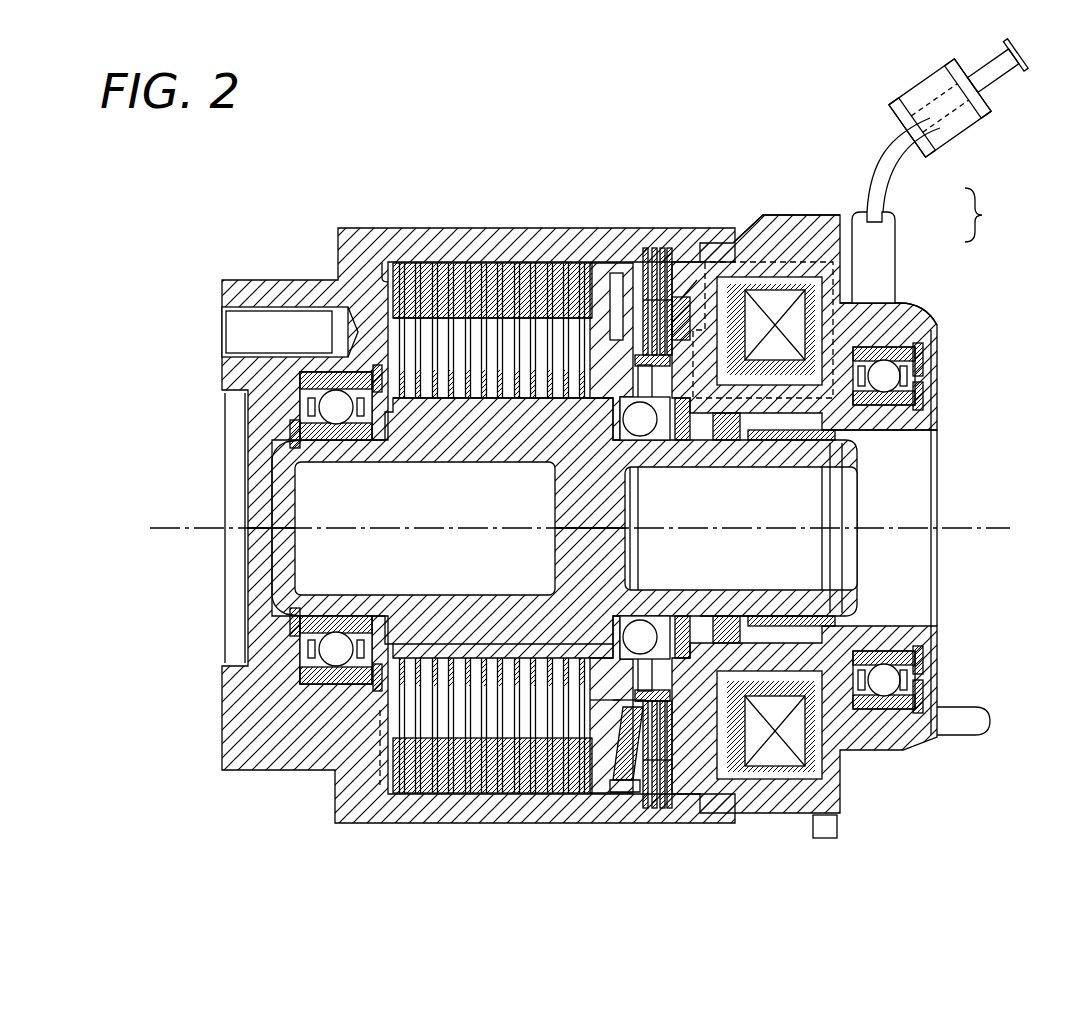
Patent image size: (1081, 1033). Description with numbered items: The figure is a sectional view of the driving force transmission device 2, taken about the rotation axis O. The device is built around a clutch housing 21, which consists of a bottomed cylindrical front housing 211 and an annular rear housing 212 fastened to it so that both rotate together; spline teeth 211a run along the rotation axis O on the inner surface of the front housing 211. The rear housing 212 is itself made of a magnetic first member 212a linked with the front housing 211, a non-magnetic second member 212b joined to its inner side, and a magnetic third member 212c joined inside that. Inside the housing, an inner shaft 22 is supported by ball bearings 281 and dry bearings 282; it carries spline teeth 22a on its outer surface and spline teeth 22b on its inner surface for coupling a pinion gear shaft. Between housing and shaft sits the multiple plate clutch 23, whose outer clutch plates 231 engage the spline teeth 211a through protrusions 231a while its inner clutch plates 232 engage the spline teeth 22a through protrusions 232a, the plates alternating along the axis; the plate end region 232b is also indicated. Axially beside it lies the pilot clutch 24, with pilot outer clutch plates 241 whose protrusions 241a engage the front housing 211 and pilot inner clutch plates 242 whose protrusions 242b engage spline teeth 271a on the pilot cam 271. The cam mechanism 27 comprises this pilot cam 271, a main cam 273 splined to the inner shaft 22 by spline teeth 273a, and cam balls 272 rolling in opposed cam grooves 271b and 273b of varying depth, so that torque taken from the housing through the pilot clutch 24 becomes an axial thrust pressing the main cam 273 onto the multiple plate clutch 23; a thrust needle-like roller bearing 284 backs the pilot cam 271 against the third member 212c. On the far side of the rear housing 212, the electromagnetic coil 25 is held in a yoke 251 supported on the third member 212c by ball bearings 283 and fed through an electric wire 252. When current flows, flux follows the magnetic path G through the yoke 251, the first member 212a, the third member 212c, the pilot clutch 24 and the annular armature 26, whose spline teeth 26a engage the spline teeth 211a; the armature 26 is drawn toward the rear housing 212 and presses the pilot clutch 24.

The driving force transmission device 2 is at (990, 157).
The clutch housing 21 is at (984, 215).
The front housing 211 is at (852, 213).
The spline teeth 211a is at (385, 255).
The rear housing 212 is at (845, 260).
The first member 212a is at (748, 244).
The second member 212b is at (682, 294).
The third member 212c is at (922, 415).
The inner shaft 22 is at (855, 606).
The spline teeth 22a is at (462, 648).
The spline teeth 22b is at (760, 590).
The multiple plate clutch 23 is at (400, 810).
The outer clutch plates 231 is at (527, 792).
The protrusions 231a is at (543, 795).
The inner clutch plates 232 is at (438, 340).
The protrusions 232a is at (440, 412).
The inner plate end 232b is at (400, 420).
The pilot clutch 24 is at (664, 248).
The pilot outer clutch plates 241 is at (680, 806).
The protrusions 241a is at (655, 250).
The pilot inner clutch plates 242 is at (663, 797).
The protrusions 242b is at (657, 665).
The electromagnetic coil 25 is at (793, 317).
The yoke 251 is at (915, 335).
The electric wire 252 is at (887, 170).
The armature 26 is at (638, 725).
The spline teeth 26a is at (628, 792).
The cam mechanism 27 is at (585, 262).
The pilot cam 271 is at (690, 440).
The spline teeth 271a is at (627, 700).
The cam grooves 271b is at (668, 436).
The cam balls 272 is at (650, 437).
The main cam 273 is at (598, 258).
The spline teeth 273a is at (590, 650).
The cam grooves 273b is at (646, 432).
The ball bearings 281 is at (293, 422).
The dry bearings 282 is at (836, 433).
The ball bearings 283 is at (925, 352).
The thrust needle-like roller bearing 284 is at (720, 628).
The magnetic path G is at (790, 258).
The rotation axis O is at (985, 527).